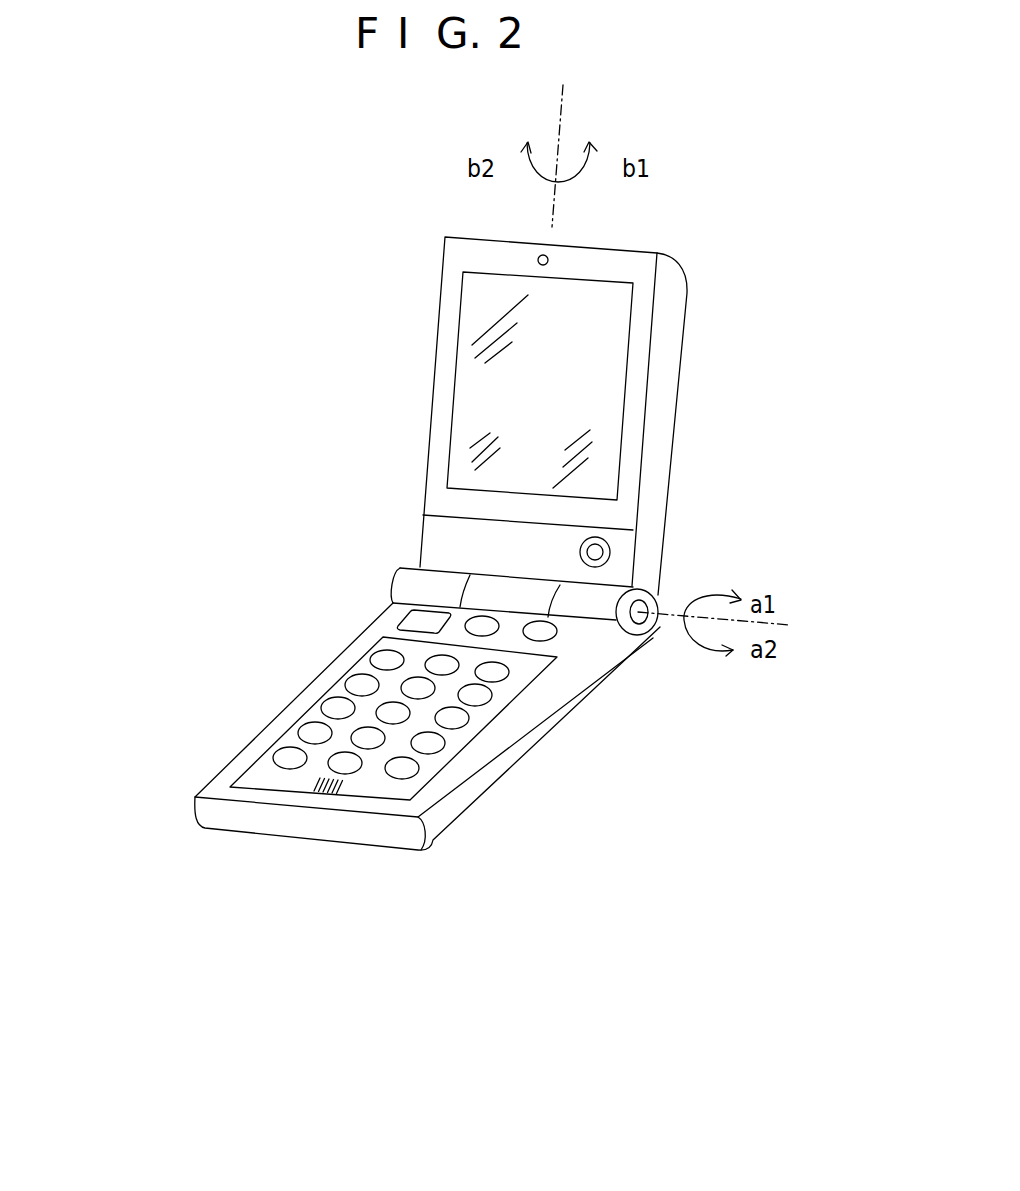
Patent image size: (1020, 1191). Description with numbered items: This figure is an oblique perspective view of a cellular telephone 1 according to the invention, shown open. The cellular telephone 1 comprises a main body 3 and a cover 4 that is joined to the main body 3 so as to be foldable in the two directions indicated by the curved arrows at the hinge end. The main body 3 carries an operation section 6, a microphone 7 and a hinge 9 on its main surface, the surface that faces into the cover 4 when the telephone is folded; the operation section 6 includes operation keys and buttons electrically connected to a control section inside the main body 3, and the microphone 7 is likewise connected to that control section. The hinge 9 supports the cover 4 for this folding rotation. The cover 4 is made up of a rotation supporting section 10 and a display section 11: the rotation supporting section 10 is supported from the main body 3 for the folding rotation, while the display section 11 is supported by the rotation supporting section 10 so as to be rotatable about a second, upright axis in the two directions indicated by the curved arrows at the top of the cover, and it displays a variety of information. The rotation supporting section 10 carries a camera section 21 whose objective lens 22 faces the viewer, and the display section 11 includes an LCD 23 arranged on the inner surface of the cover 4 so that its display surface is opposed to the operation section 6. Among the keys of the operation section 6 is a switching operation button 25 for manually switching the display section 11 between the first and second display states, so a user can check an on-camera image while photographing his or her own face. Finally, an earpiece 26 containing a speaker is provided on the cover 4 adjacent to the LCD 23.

The cellular telephone 1 is at (348, 1019).
The main body 3 is at (305, 712).
The cover 4 is at (196, 320).
The operation section 6 is at (298, 732).
The microphone 7 is at (340, 790).
The hinge 9 is at (408, 571).
The rotation supporting section 10 is at (437, 503).
The display section 11 is at (442, 380).
The camera section 21 is at (609, 560).
The objective lens 22 is at (602, 546).
The LCD 23 is at (597, 362).
The switching operation button 25 is at (407, 625).
The earpiece 26 is at (553, 260).